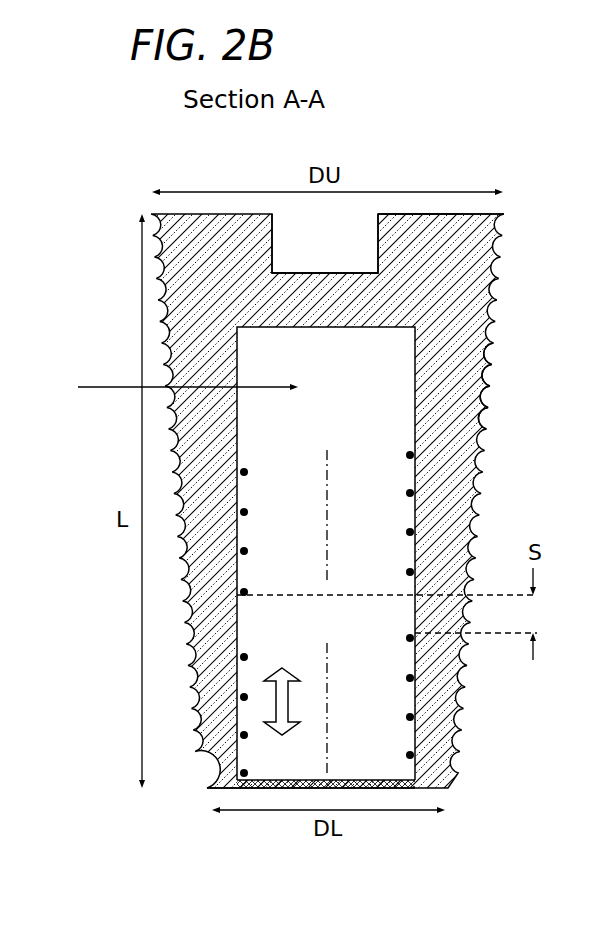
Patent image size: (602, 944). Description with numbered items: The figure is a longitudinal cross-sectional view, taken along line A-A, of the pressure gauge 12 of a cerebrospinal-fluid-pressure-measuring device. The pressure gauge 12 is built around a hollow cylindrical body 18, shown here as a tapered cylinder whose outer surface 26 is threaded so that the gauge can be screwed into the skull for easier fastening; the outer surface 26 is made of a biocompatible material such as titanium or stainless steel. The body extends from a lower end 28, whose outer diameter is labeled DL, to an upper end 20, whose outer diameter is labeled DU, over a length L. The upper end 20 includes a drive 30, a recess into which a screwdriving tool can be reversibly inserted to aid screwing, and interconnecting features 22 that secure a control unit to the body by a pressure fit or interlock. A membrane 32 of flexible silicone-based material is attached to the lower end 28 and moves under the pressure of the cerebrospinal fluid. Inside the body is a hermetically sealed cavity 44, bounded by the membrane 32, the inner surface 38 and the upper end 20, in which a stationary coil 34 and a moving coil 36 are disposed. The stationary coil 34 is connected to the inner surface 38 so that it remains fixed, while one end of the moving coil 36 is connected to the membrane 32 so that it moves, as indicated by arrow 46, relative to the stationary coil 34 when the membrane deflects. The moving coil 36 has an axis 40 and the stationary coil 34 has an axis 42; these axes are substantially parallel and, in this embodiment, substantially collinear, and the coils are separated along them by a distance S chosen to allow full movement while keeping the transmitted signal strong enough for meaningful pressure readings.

The pressure gauge 12 is at (481, 111).
The hollow cylindrical body 18 is at (487, 214).
The upper end 20 is at (424, 214).
The interconnecting features 22 is at (368, 272).
The outer surface 26 is at (490, 385).
The lower end 28 is at (222, 790).
The drive 30 is at (280, 262).
The membrane 32 is at (378, 789).
The stationary coil 34 is at (407, 452).
The moving coil 36 is at (404, 715).
The inner surface 38 is at (415, 345).
The axis of moving coil 40 is at (327, 648).
The axis of stationary coil 42 is at (318, 490).
The cavity 44 is at (173, 385).
The arrow 46 is at (282, 666).